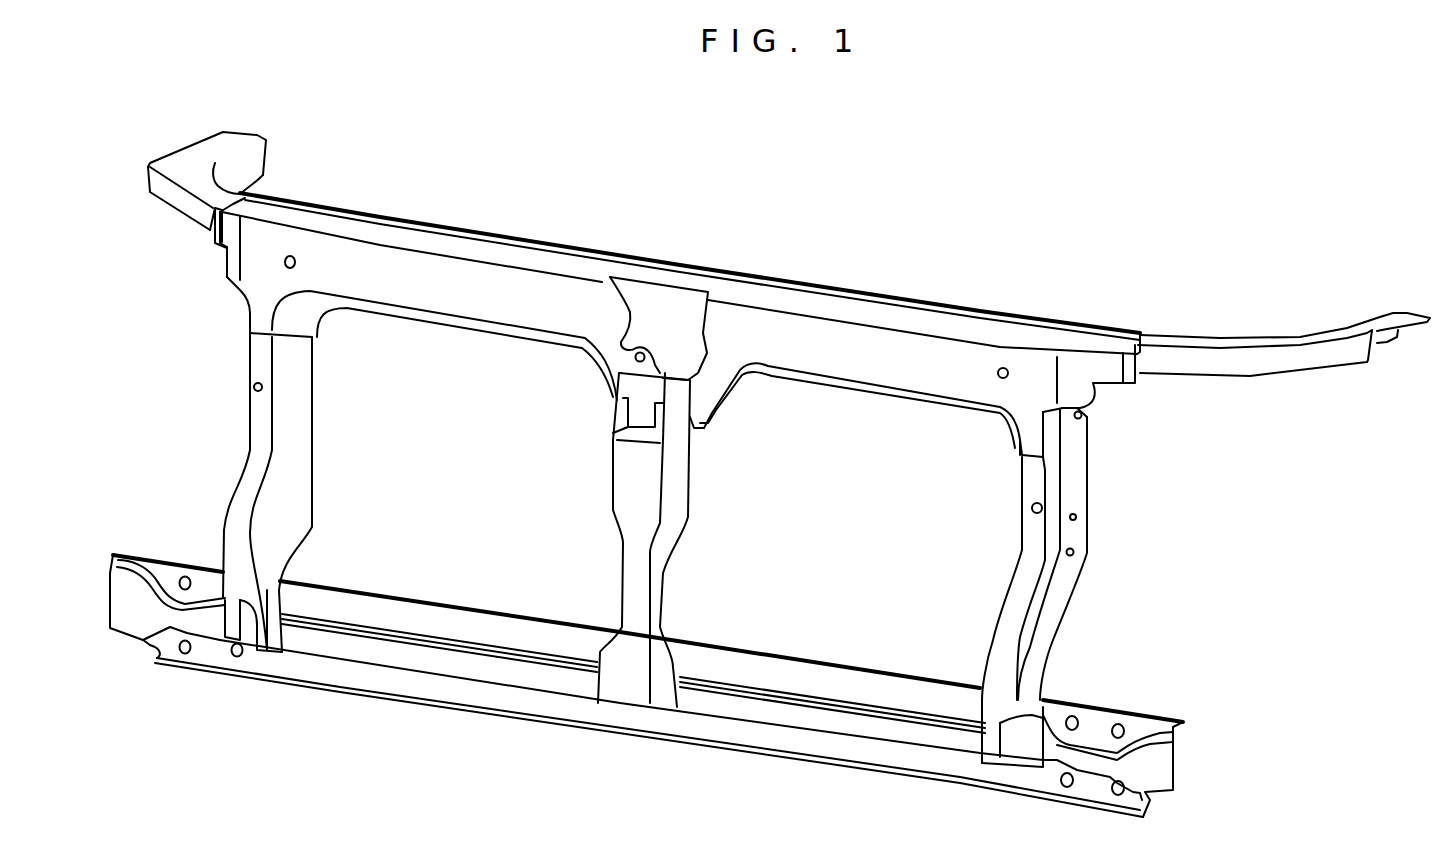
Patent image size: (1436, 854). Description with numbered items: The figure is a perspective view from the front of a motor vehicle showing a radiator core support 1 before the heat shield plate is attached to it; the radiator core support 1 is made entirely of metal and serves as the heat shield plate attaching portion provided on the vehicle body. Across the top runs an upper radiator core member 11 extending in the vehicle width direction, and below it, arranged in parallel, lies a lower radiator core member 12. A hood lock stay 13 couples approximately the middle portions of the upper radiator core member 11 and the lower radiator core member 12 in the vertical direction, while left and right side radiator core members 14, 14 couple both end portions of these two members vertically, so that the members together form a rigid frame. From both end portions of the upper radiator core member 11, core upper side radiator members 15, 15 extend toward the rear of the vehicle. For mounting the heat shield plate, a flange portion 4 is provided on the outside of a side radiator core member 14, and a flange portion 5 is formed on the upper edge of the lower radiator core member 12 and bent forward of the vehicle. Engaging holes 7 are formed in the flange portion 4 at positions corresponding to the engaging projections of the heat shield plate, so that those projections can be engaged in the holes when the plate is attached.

The radiator core support 1 is at (522, 233).
The upper radiator core member 11 is at (798, 298).
The lower radiator core member 12 is at (417, 624).
The hood lock stay 13 is at (623, 478).
The side radiator core member 14 is at (290, 420).
The core upper side radiator member 15 is at (207, 152).
The flange portion 4 is at (1057, 607).
The flange portion 5 is at (145, 570).
The engaging hole 7 is at (1080, 418).